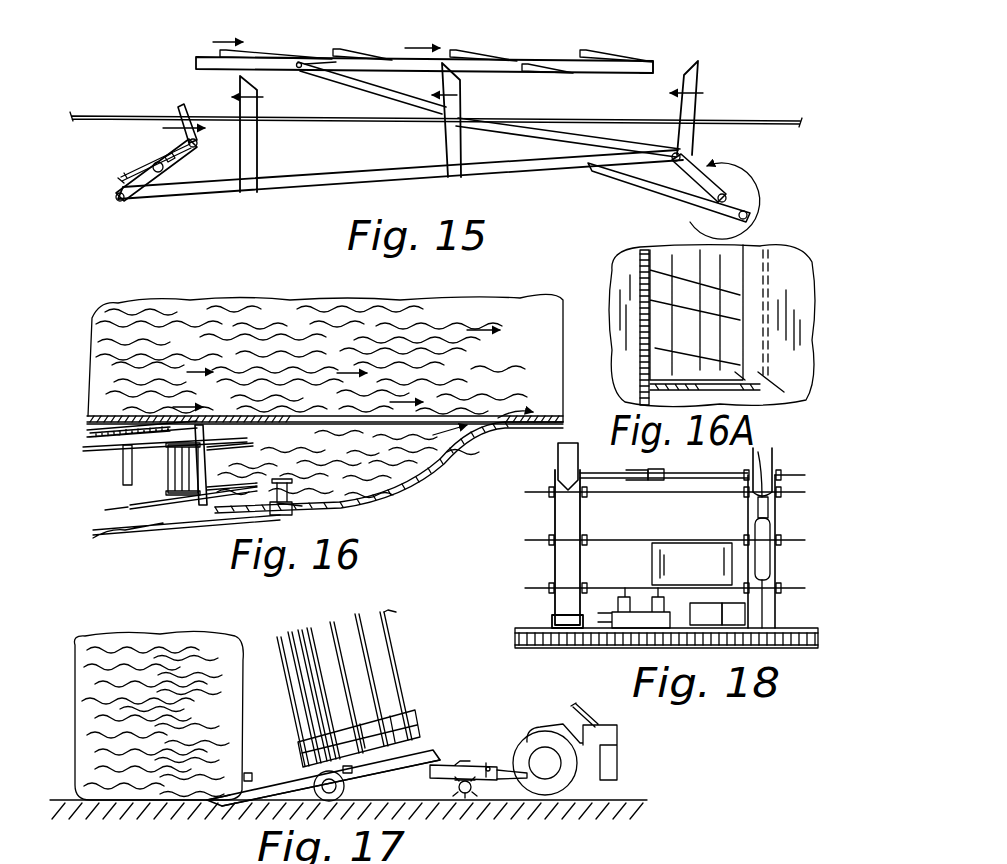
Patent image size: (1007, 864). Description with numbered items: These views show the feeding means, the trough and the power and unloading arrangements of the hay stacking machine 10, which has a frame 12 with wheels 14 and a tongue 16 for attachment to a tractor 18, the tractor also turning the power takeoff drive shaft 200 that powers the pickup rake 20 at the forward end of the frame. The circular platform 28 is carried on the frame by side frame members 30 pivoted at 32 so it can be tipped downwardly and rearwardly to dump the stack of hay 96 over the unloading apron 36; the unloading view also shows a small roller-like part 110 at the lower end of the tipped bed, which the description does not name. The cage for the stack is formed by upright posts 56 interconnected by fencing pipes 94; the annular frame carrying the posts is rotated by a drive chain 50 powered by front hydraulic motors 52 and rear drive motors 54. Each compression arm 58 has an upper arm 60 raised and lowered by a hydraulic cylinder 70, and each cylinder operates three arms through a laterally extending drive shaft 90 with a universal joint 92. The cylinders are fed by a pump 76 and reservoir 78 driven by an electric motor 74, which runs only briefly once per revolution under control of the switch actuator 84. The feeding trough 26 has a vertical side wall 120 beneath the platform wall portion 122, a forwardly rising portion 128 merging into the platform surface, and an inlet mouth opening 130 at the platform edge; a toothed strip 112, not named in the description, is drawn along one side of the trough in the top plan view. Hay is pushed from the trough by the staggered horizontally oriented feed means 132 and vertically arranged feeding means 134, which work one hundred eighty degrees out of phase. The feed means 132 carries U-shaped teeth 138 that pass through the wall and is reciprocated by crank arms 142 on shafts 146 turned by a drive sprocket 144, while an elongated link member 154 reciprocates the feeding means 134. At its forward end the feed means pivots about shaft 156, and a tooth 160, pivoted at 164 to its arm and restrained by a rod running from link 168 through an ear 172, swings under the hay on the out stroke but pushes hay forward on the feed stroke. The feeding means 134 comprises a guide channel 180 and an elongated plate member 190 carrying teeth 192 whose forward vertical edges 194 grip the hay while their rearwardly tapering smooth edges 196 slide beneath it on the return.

In FIG. 17, the hay stacking machine 10 is at (381, 669).
In FIG. 17, the frame 12 is at (470, 765).
In FIG. 17, the wheels 14 is at (352, 788).
In FIG. 17, the tongue 16 is at (505, 780).
In FIG. 17, the tractor 18 is at (548, 722).
In FIG. 17, the pickup rake 20 is at (470, 792).
In FIG. 16, the feeding trough 26 is at (392, 430).
In FIG. 16A, the feeding trough 26 is at (710, 312).
In FIG. 16A, the circular platform 28 is at (807, 335).
In FIG. 17, the circular platform 28 is at (278, 772).
In FIG. 17, the side frame members 30 is at (383, 762).
In FIG. 17, the pivot 32 is at (352, 773).
In FIG. 17, the unloading apron 36 is at (240, 803).
In FIG. 18, the drive chain 50 is at (515, 638).
In FIG. 17, the hydraulic motors 52 is at (542, 863).
In FIG. 17, the drive motors 54 is at (721, 855).
In FIG. 17, the upright posts 56 is at (412, 716).
In FIG. 18, the compression arms 58 is at (552, 452).
In FIG. 17, the compression arms 58 is at (395, 660).
In FIG. 18, the upper arm 60 is at (553, 467).
In FIG. 17, the upper arm 60 is at (331, 620).
In FIG. 18, the hydraulic cylinder 70 is at (775, 522).
In FIG. 18, the electric motor 74 is at (746, 612).
In FIG. 18, the pump 76 is at (705, 626).
In FIG. 18, the reservoir 78 is at (655, 560).
In FIG. 18, the switch actuator 84 is at (630, 620).
In FIG. 18, the drive shaft 90 is at (710, 474).
In FIG. 18, the universal joint 92 is at (660, 474).
In FIG. 18, the fencing pipes 94 is at (800, 488).
In FIG. 16, the stack of hay 96 is at (313, 305).
In FIG. 17, the stack of hay 96 is at (208, 650).
In FIG. 17, the roller 110 is at (250, 776).
In FIG. 16A, the chain 112 is at (640, 278).
In FIG. 15, the vertical side wall 120 is at (752, 117).
In FIG. 16, the vertical side wall 120 is at (234, 416).
In FIG. 16A, the vertical side wall 120 is at (784, 392).
In FIG. 16, the platform wall portion 122 is at (288, 401).
In FIG. 16A, the platform wall portion 122 is at (755, 275).
In FIG. 16A, the forwardly and upwardly extending portion 128 is at (705, 383).
In FIG. 16A, the inlet mouth opening 130 is at (743, 373).
In FIG. 15, the horizontally oriented feed means 132 is at (292, 199).
In FIG. 16, the horizontally oriented feed means 132 is at (262, 462).
In FIG. 15, the vertically arranged feeding means 134 is at (519, 50).
In FIG. 16, the vertically arranged feeding means 134 is at (382, 462).
In FIG. 15, the U-shaped teeth 138 is at (258, 148).
In FIG. 16, the U-shaped teeth 138 is at (248, 450).
In FIG. 15, the crank arms 142 is at (760, 175).
In FIG. 16, the crank arms 142 is at (166, 485).
In FIG. 16, the drive sprocket 144 is at (87, 433).
In FIG. 16, the shafts 146 is at (150, 523).
In FIG. 15, the elongated link member 154 is at (540, 138).
In FIG. 15, the shaft 156 is at (164, 170).
In FIG. 15, the tooth 160 is at (175, 112).
In FIG. 15, the pivot connection 164 is at (196, 147).
In FIG. 15, the link 168 is at (155, 158).
In FIG. 15, the ear 172 is at (140, 165).
In FIG. 16, the guide channel 180 is at (292, 515).
In FIG. 15, the elongated plate member 190 is at (641, 61).
In FIG. 15, the teeth 192 is at (364, 52).
In FIG. 16, the teeth 192 is at (300, 508).
In FIG. 15, the forward vertical edges 194 is at (334, 50).
In FIG. 15, the rearwardly tapering smooth edges 196 is at (347, 50).
In FIG. 17, the power takeoff drive shaft 200 is at (498, 765).